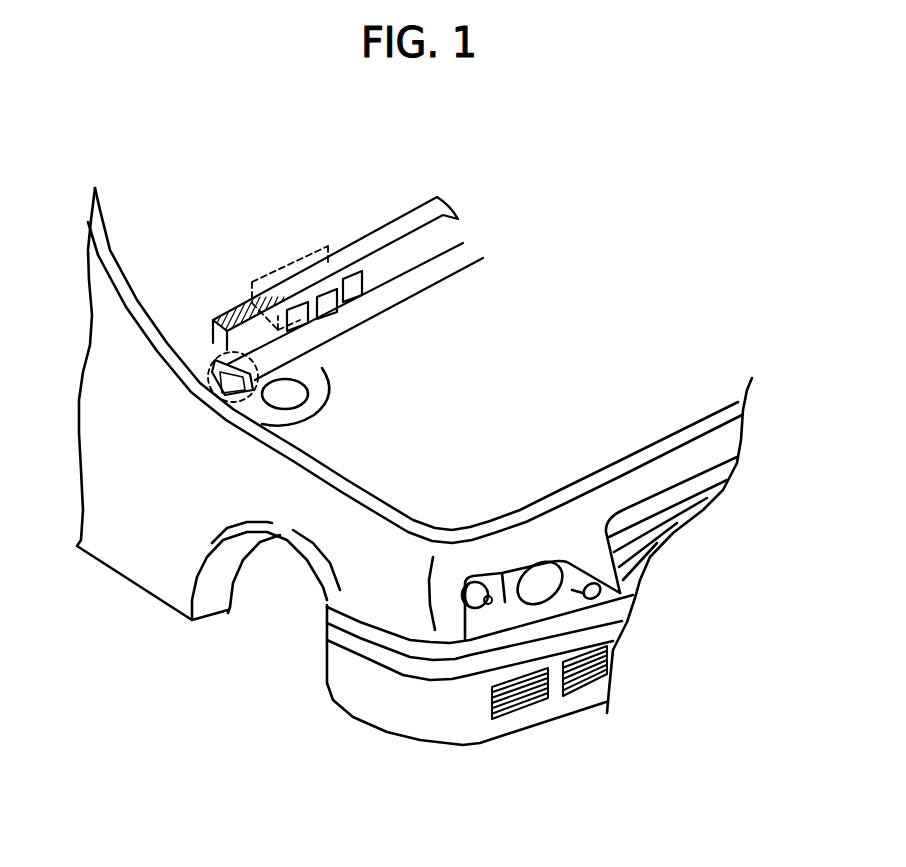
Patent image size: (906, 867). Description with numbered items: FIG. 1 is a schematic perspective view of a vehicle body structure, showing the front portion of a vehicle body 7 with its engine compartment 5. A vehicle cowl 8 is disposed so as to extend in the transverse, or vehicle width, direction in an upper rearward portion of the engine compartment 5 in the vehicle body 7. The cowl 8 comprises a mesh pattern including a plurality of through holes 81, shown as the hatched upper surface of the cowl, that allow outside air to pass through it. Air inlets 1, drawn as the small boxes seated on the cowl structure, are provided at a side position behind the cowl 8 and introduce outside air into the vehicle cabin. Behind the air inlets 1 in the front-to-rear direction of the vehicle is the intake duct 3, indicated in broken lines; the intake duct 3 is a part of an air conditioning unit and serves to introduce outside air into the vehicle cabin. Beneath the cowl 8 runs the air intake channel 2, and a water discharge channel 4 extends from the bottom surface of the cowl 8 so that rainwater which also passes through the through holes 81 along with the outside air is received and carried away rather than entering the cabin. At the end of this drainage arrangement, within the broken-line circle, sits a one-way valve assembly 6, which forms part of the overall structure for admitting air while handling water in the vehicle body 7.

The air inlets 1 is at (298, 322).
The air intake channel 2 is at (427, 238).
The intake duct 3 is at (287, 263).
The water discharge channel 4 is at (423, 273).
The engine compartment 5 is at (334, 267).
The one-way valve assembly 6 is at (215, 360).
The vehicle body 7 is at (729, 575).
The vehicle cowl 8 is at (415, 208).
The through holes 81 is at (377, 233).